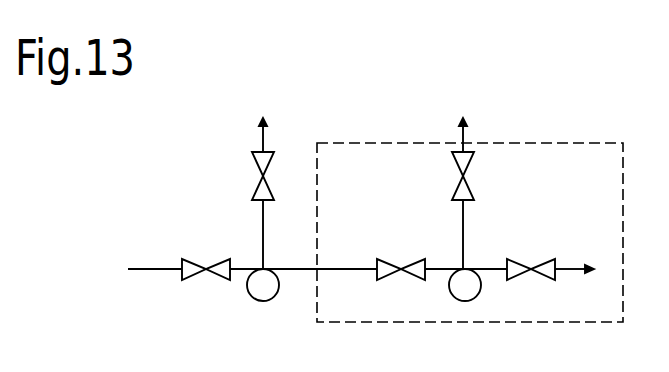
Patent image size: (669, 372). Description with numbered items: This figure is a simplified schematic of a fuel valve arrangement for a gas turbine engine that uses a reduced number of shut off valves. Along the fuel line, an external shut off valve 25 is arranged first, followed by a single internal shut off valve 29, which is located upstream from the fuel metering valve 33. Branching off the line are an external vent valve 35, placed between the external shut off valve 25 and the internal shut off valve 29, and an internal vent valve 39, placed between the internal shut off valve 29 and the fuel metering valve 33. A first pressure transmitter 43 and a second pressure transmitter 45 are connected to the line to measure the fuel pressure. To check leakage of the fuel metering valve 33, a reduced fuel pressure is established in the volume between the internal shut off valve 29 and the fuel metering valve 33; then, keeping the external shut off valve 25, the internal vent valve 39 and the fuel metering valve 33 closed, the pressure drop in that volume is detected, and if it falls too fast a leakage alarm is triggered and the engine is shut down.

The external shut off valve 25 is at (225, 258).
The internal shut off valve 29 is at (421, 258).
The fuel metering valve 33 is at (553, 260).
The external vent valve 35 is at (263, 160).
The internal vent valve 39 is at (468, 185).
The first pressure transmitter 43 is at (262, 287).
The second pressure transmitter 45 is at (478, 290).